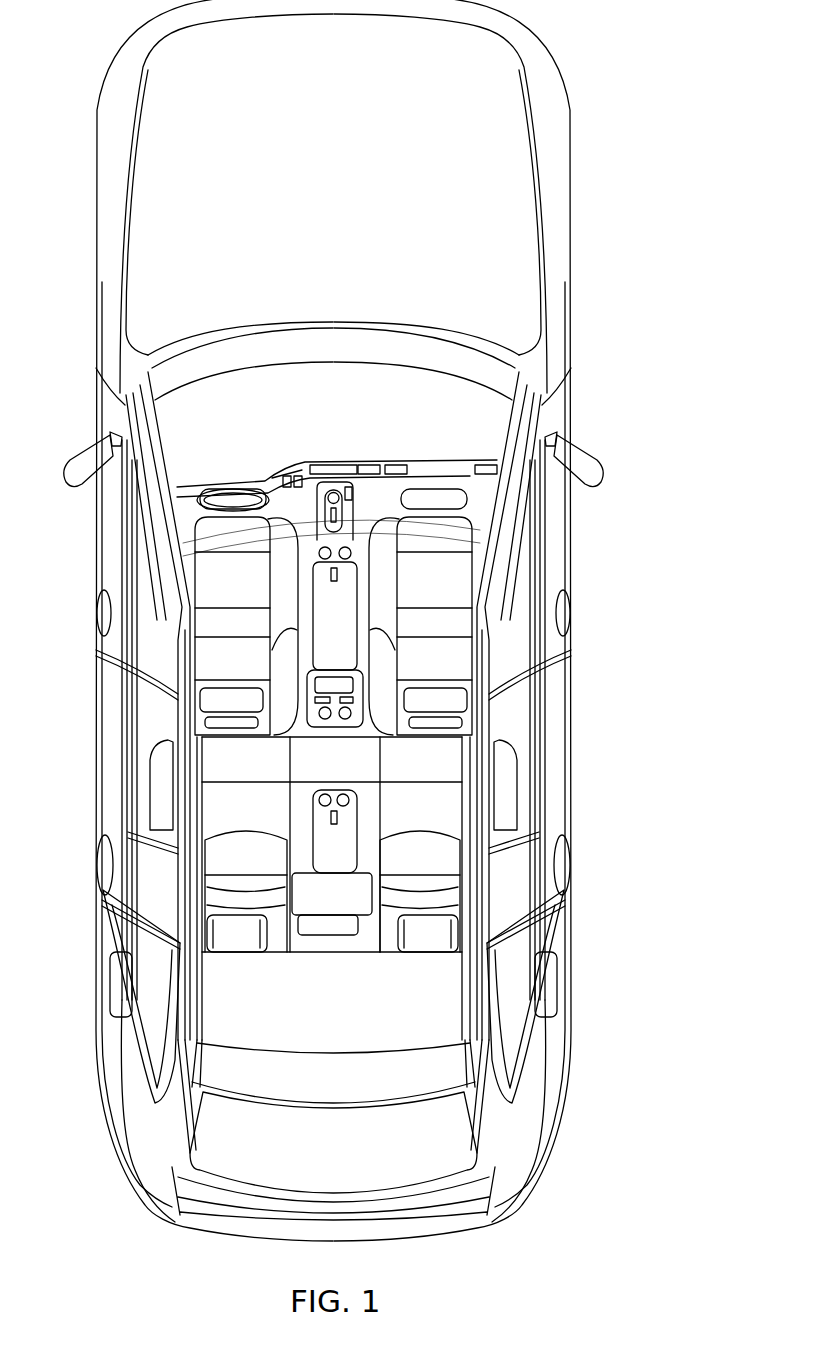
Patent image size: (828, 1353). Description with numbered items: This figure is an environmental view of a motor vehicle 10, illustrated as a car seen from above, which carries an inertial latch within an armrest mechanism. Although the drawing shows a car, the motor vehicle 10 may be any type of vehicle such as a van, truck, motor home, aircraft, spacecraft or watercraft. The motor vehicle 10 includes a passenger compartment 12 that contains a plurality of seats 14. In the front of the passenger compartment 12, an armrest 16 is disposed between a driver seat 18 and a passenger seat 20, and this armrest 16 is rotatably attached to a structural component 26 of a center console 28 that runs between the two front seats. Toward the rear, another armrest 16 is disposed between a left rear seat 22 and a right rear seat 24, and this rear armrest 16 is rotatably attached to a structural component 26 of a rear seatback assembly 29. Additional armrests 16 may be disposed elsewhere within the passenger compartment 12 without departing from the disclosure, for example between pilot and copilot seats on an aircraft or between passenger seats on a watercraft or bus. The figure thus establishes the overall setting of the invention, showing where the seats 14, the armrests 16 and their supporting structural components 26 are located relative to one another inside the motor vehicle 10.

The motor vehicle 10 is at (580, 114).
The passenger compartment 12 is at (410, 392).
The seats 14 is at (333, 720).
The armrest 16 is at (344, 616).
The driver seat 18 is at (248, 595).
The passenger seat 20 is at (459, 595).
The left rear seat 22 is at (268, 866).
The right rear seat 24 is at (449, 866).
The structural component 26 is at (485, 778).
The center console 28 is at (348, 663).
The rear seatback assembly 29 is at (354, 869).